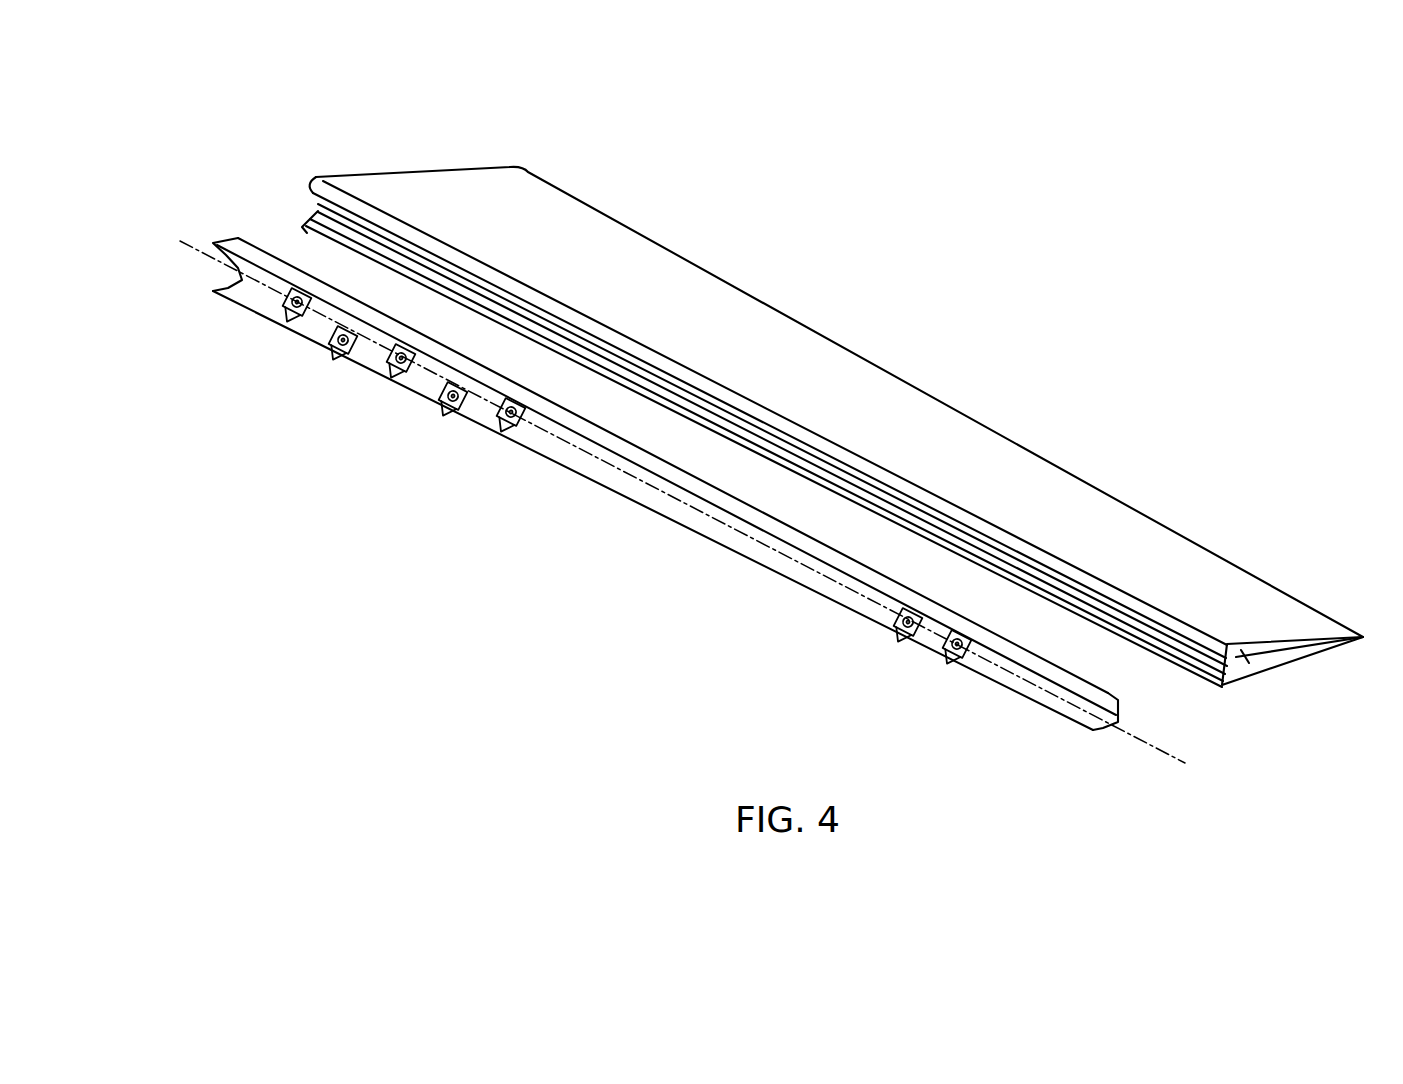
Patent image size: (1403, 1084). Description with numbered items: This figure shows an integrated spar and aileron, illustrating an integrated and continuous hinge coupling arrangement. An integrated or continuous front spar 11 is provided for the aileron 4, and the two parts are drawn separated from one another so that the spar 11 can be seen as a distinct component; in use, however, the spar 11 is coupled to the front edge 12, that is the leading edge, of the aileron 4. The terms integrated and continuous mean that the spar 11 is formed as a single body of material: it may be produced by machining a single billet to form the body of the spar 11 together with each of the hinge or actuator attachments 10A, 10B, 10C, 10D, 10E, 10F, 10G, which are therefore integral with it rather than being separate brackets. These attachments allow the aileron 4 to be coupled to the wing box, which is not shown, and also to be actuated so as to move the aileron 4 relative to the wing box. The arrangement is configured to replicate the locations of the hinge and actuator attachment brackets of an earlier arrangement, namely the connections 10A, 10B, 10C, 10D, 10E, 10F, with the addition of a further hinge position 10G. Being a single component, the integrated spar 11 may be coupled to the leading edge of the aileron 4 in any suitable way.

The aileron 4 is at (1218, 550).
The hinge or actuator attachment 10A is at (288, 318).
The hinge or actuator attachment 10B is at (333, 344).
The hinge or actuator attachment 10C is at (398, 370).
The hinge or actuator attachment 10D is at (450, 400).
The hinge or actuator attachment 10E is at (505, 433).
The hinge or actuator attachment 10F is at (900, 628).
The further hinge position 10G is at (957, 655).
The integrated front spar 11 is at (1092, 731).
The front edge 12 is at (1218, 684).